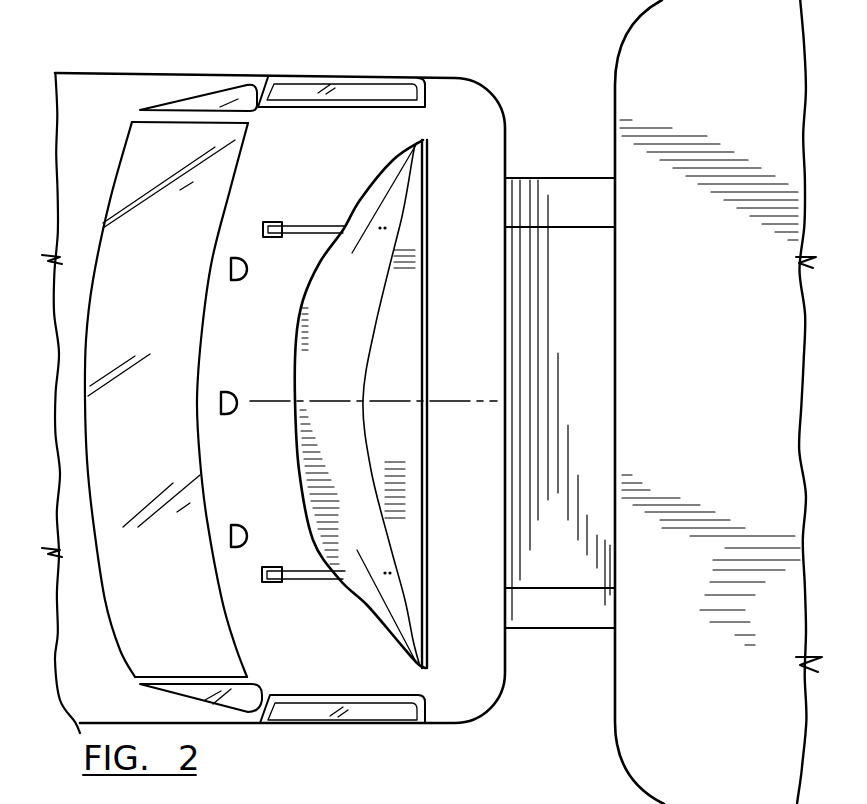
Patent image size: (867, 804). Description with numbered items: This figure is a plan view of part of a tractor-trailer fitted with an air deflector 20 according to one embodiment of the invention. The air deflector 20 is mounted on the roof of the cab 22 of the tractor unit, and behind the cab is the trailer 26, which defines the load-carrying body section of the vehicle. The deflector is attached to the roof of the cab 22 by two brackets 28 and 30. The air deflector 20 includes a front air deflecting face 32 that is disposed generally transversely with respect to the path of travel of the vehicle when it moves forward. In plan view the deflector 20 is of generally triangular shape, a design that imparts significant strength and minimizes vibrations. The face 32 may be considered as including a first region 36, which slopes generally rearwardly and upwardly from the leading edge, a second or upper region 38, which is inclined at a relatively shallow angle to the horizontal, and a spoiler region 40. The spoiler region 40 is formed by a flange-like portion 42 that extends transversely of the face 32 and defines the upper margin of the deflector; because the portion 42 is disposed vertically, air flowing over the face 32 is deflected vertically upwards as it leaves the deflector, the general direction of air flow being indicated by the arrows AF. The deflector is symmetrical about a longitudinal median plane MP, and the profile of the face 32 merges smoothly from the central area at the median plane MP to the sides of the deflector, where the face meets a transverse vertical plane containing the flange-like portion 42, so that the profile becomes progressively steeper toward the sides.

The air deflector 20 is at (392, 404).
The cab 22 is at (468, 106).
The trailer 26 is at (718, 402).
The bracket 28 is at (317, 240).
The bracket 30 is at (311, 570).
The front air deflecting face 32 is at (341, 219).
The first region 36 is at (358, 392).
The second or upper region 38 is at (362, 392).
The spoiler region 40 is at (416, 526).
The flange-like portion 42 is at (429, 437).
The longitudinal median plane MP is at (472, 400).
The air flow direction AF is at (484, 798).